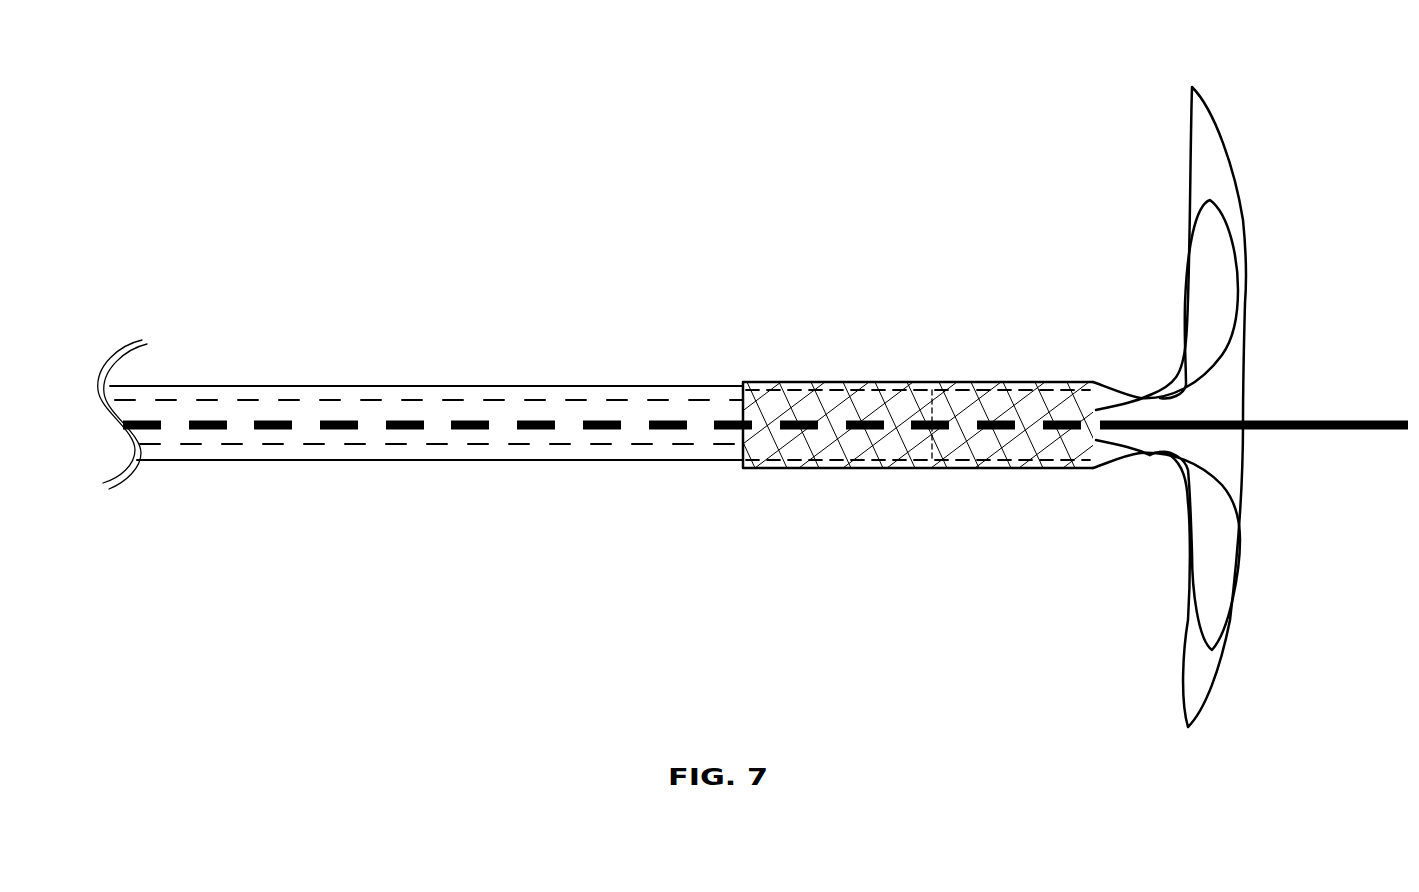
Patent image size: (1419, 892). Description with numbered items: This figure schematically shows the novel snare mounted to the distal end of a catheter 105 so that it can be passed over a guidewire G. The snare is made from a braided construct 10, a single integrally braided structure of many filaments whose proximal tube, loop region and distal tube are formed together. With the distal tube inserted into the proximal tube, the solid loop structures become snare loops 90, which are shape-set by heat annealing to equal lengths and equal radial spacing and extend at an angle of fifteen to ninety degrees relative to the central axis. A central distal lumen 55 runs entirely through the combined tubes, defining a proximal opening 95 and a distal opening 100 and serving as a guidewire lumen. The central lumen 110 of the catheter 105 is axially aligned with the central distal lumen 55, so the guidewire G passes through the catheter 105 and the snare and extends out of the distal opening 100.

The braided construct 10 is at (822, 293).
The central distal lumen 55 is at (987, 448).
The snare loops 90 is at (1178, 151).
The proximal opening 95 is at (738, 434).
The distal opening 100 is at (1126, 440).
The catheter 105 is at (554, 372).
The central lumen 110 is at (373, 434).
The guidewire G is at (1322, 405).